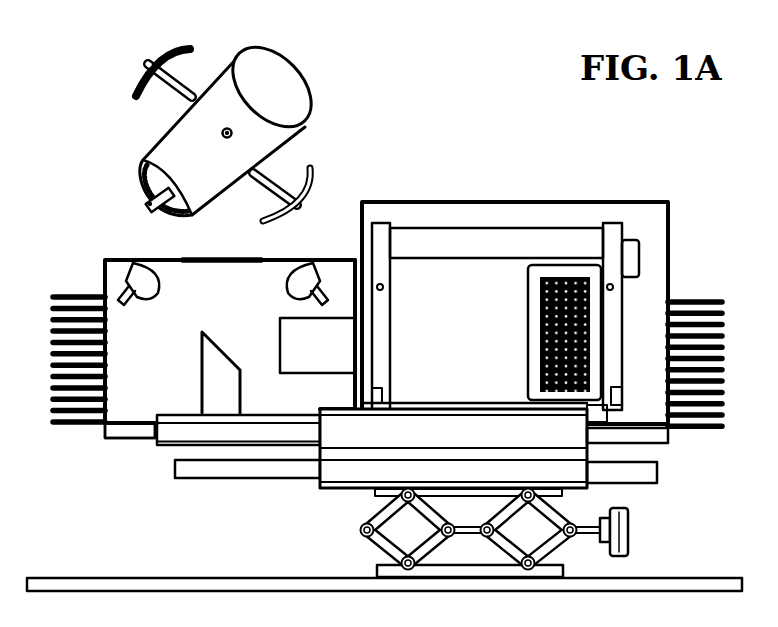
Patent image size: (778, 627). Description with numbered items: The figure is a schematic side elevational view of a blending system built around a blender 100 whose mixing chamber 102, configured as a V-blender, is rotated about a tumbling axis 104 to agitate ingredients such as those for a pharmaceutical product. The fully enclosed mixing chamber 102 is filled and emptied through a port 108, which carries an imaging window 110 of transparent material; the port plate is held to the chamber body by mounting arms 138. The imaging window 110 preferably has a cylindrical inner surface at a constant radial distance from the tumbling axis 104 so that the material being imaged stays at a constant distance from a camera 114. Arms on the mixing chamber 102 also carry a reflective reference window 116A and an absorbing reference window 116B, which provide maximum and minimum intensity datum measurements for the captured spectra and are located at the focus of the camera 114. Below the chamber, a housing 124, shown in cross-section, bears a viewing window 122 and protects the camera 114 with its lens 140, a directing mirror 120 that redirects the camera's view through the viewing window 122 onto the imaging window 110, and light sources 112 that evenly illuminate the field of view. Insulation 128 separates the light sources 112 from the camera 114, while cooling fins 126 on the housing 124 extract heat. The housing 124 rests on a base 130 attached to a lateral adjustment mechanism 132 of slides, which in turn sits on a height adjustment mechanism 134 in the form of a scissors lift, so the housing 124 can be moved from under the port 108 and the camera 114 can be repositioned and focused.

The blender 100 is at (116, 163).
The mixing chamber 102 is at (287, 78).
The tumbling axis 104 is at (233, 134).
The port 108 is at (140, 180).
The imaging window 110 is at (150, 197).
The light sources 112 is at (130, 275).
The camera 114 is at (485, 275).
The reflective reference window 116A is at (170, 50).
The absorbing reference window 116B is at (313, 182).
The directing mirror 120 is at (216, 336).
The viewing window 122 is at (207, 258).
The housing 124 is at (602, 200).
The cooling fins 126 is at (706, 297).
The insulation 128 is at (348, 390).
The base 130 is at (130, 440).
The lateral adjustment mechanism 132 is at (186, 432).
The height adjustment mechanism 134 is at (362, 543).
The mounting arms 138 is at (160, 158).
The lens 140 is at (293, 376).